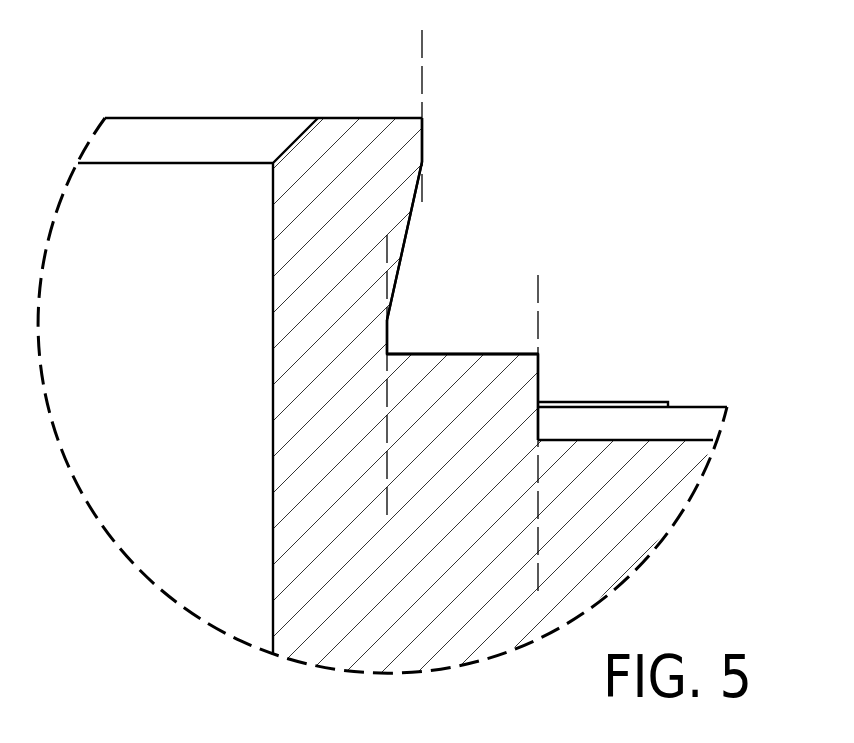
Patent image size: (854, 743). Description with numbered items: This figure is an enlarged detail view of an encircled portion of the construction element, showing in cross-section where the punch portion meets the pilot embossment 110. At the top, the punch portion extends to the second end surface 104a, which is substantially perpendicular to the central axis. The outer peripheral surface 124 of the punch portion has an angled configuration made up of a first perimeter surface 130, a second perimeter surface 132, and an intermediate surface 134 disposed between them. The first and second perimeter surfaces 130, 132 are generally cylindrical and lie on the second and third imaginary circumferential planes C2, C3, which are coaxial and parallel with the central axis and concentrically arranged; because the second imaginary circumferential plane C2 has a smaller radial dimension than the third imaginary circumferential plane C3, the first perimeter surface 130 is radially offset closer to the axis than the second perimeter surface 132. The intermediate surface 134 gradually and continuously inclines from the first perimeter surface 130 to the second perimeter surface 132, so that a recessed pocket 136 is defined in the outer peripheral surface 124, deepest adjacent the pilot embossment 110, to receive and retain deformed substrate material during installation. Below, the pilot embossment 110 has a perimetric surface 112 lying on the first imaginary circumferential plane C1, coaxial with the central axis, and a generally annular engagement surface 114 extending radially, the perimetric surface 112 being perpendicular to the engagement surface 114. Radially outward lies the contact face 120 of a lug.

The second end surface 104a is at (363, 118).
The pilot embossment 110 is at (555, 334).
The perimetric surface 112 is at (538, 375).
The engagement surface 114 is at (503, 354).
The contact face 120 is at (690, 437).
The outer peripheral surface 124 is at (514, 176).
The first perimeter surface 130 is at (387, 347).
The second perimeter surface 132 is at (422, 135).
The intermediate surface 134 is at (410, 232).
The recessed pocket 136 is at (470, 285).
The first imaginary circumferential plane C1 is at (538, 575).
The second imaginary circumferential plane C2 is at (387, 459).
The third imaginary circumferential plane C3 is at (422, 42).